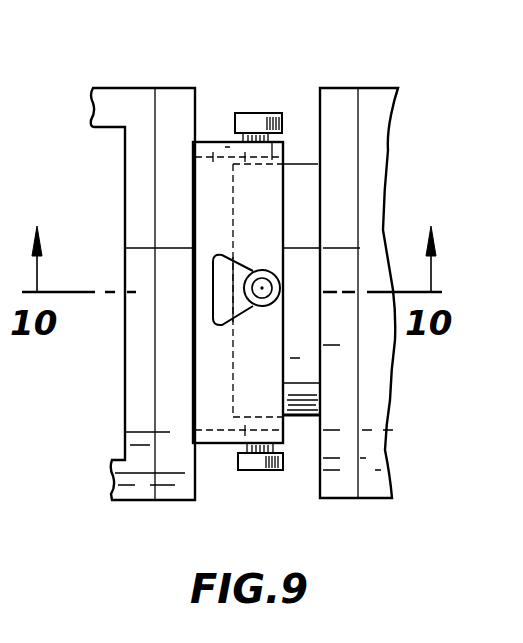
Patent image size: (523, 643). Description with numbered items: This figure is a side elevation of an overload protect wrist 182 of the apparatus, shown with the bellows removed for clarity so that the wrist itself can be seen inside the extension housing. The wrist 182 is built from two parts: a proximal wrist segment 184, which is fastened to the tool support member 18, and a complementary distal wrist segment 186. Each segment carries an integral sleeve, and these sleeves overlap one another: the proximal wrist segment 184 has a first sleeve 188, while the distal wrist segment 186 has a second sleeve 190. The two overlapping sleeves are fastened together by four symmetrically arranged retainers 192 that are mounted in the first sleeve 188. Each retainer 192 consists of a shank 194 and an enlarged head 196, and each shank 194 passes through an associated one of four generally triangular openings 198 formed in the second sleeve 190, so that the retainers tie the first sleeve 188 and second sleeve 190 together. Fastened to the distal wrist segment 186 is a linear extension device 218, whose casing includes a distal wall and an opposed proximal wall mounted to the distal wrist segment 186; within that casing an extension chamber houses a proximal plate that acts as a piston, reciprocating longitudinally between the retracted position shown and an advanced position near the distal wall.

The tool support member 18 is at (383, 118).
The overload protect wrist 182 is at (254, 275).
The proximal wrist segment 184 is at (347, 190).
The distal wrist segment 186 is at (174, 100).
The first sleeve 188 is at (310, 377).
The second sleeve 190 is at (213, 388).
The retainer 192 is at (262, 300).
The shank 194 is at (262, 138).
The enlarged head 196 is at (240, 460).
The triangular opening 198 is at (241, 265).
The linear extension device 218 is at (137, 169).